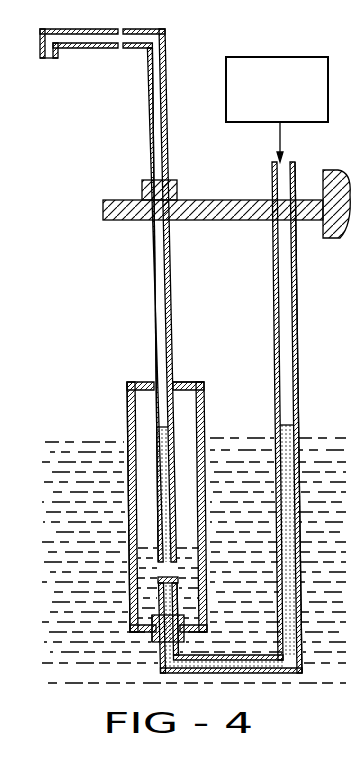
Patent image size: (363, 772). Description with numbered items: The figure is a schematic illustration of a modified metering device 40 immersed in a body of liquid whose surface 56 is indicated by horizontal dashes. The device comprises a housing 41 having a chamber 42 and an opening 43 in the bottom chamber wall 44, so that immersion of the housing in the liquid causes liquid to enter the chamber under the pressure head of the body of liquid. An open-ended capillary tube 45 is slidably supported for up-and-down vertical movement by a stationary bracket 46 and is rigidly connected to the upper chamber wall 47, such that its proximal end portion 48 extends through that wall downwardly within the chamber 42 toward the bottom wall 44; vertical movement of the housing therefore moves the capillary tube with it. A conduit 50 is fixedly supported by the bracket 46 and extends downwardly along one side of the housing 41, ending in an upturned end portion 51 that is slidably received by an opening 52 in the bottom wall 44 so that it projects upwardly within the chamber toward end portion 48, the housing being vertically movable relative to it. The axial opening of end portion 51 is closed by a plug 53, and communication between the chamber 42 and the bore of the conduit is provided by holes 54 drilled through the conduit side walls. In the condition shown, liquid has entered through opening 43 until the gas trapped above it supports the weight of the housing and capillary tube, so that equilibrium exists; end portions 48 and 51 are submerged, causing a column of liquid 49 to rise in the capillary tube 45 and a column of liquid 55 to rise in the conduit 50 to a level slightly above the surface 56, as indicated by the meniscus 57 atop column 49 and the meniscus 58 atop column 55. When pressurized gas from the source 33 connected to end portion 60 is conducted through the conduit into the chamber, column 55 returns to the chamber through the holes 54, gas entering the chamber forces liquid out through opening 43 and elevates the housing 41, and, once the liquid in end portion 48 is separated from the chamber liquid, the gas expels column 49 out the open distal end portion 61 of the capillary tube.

The source of pressurized gas 33 is at (297, 55).
The metering device 40 is at (136, 326).
The housing 41 is at (125, 430).
The chamber 42 is at (185, 520).
The opening 43 is at (180, 640).
The bottom chamber wall 44 is at (152, 640).
The capillary tube 45 is at (171, 264).
The stationary bracket 46 is at (225, 200).
The upper chamber wall 47 is at (187, 381).
The proximal end portion 48 is at (173, 440).
The column of liquid 49 is at (167, 493).
The conduit 50 is at (296, 352).
The upturned end portion 51 is at (135, 605).
The opening 52 is at (158, 645).
The plug 53 is at (177, 578).
The holes 54 is at (177, 590).
The column of liquid 55 is at (288, 513).
The surface of the body of liquid 56 is at (232, 442).
The meniscus 57 is at (163, 425).
The meniscus 58 is at (287, 425).
The end portion 60 is at (296, 167).
The open distal end portion 61 is at (100, 50).